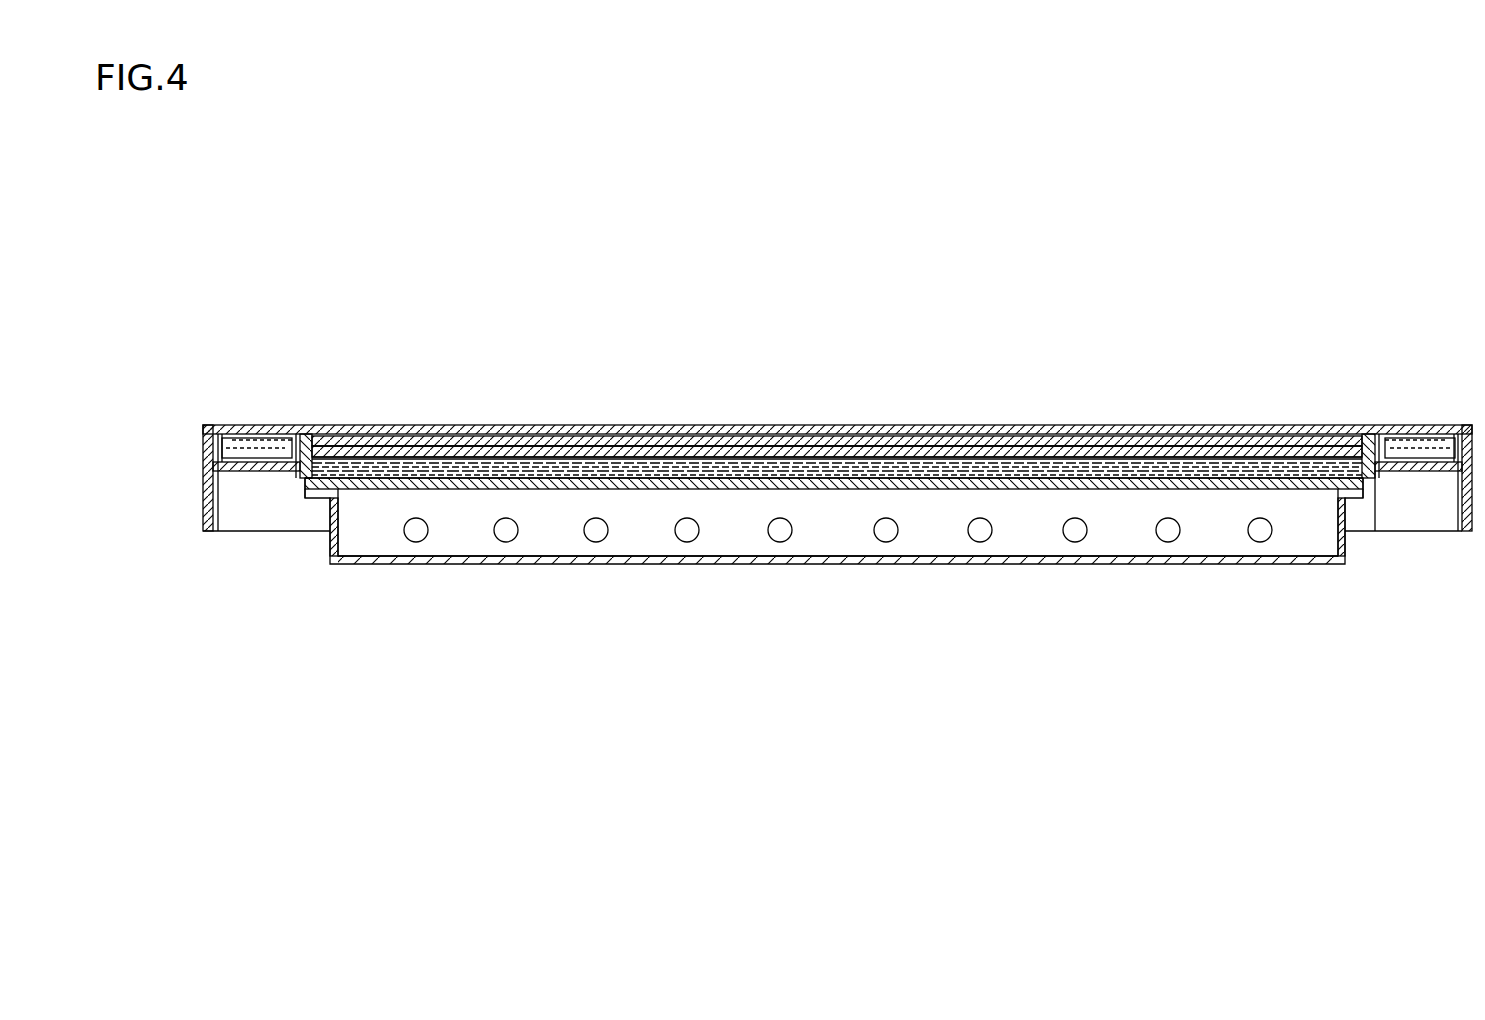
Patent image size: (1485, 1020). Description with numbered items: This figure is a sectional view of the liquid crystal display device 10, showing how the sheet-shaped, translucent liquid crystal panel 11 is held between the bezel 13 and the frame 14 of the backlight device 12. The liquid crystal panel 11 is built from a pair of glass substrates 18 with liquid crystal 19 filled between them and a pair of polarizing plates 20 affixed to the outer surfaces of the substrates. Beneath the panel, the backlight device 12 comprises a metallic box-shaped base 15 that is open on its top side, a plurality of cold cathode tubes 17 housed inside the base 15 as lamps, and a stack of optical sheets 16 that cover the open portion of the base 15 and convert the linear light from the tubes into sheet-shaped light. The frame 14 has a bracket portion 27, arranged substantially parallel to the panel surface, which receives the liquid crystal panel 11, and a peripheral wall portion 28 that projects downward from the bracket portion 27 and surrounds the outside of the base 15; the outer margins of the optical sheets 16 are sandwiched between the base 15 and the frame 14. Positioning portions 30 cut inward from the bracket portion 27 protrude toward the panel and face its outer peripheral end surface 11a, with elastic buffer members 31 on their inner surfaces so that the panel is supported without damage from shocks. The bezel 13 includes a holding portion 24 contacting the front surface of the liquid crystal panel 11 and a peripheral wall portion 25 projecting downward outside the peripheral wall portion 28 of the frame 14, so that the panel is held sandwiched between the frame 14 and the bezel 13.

The liquid crystal display device 10 is at (952, 422).
The liquid crystal panel 11 is at (518, 425).
The outer peripheral end surface 11a is at (303, 473).
The backlight device 12 is at (998, 603).
The bezel 13 is at (222, 425).
The frame 14 is at (222, 487).
The base 15 is at (360, 567).
The optical sheets 16 is at (850, 480).
The cold cathode tubes 17 is at (596, 532).
The glass substrates 18 is at (690, 455).
The liquid crystal 19 is at (652, 445).
The polarizing plates 20 is at (725, 462).
The holding portion 24 is at (355, 425).
The peripheral wall portion 25 is at (213, 470).
The bracket portion 27 is at (301, 480).
The peripheral wall portion 28 is at (205, 500).
The positioning portions 30 is at (300, 448).
The buffer members 31 is at (310, 440).